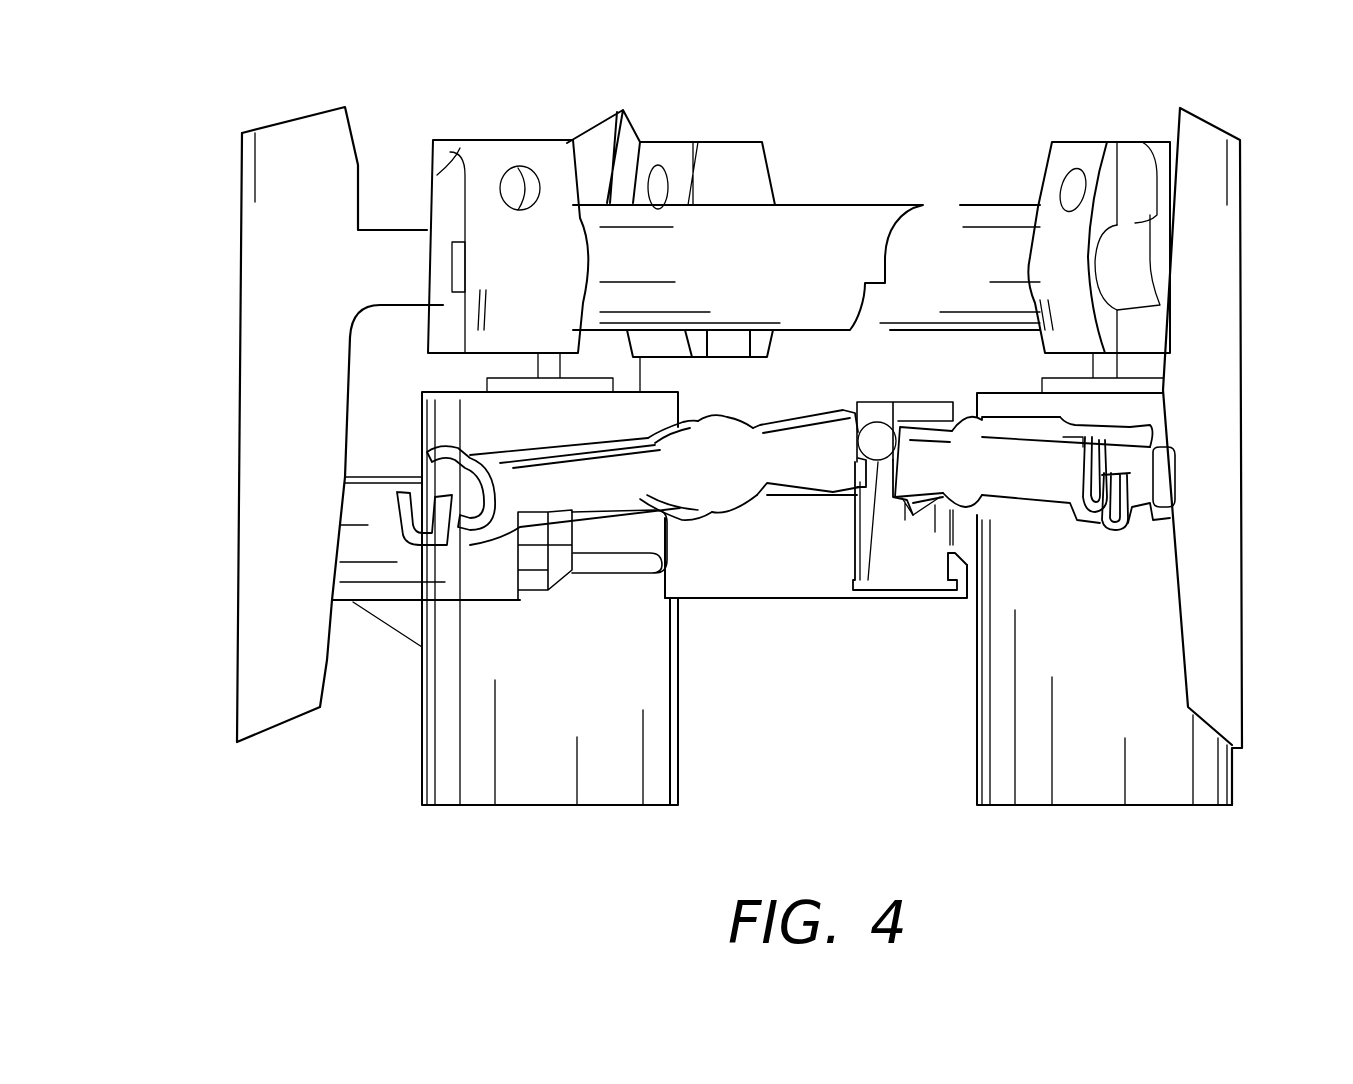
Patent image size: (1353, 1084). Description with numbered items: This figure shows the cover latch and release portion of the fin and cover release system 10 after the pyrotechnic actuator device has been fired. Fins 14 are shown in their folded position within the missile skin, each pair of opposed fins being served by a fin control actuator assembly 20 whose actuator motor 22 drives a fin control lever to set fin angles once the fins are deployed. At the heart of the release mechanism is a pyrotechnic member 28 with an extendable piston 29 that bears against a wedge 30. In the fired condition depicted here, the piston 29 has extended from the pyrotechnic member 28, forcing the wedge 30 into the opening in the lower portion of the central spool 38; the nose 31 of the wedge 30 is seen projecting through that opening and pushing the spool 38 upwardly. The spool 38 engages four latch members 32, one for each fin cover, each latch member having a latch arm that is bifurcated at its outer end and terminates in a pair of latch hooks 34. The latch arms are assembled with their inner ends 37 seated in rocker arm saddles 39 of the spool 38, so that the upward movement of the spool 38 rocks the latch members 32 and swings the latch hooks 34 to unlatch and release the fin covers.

The system 10 is at (1292, 162).
The fin 14 is at (1243, 515).
The fin control actuator assembly 20 is at (793, 645).
The actuator motor 22 is at (610, 807).
The pyrotechnic member 28 is at (532, 598).
The piston 29 is at (590, 576).
The wedge 30 is at (738, 590).
The nose 31 is at (965, 600).
The latch member 32 is at (540, 437).
The latch hook 34 is at (397, 495).
The inner end 37 is at (862, 425).
The spool 38 is at (913, 575).
The rocker arm saddle 39 is at (879, 462).